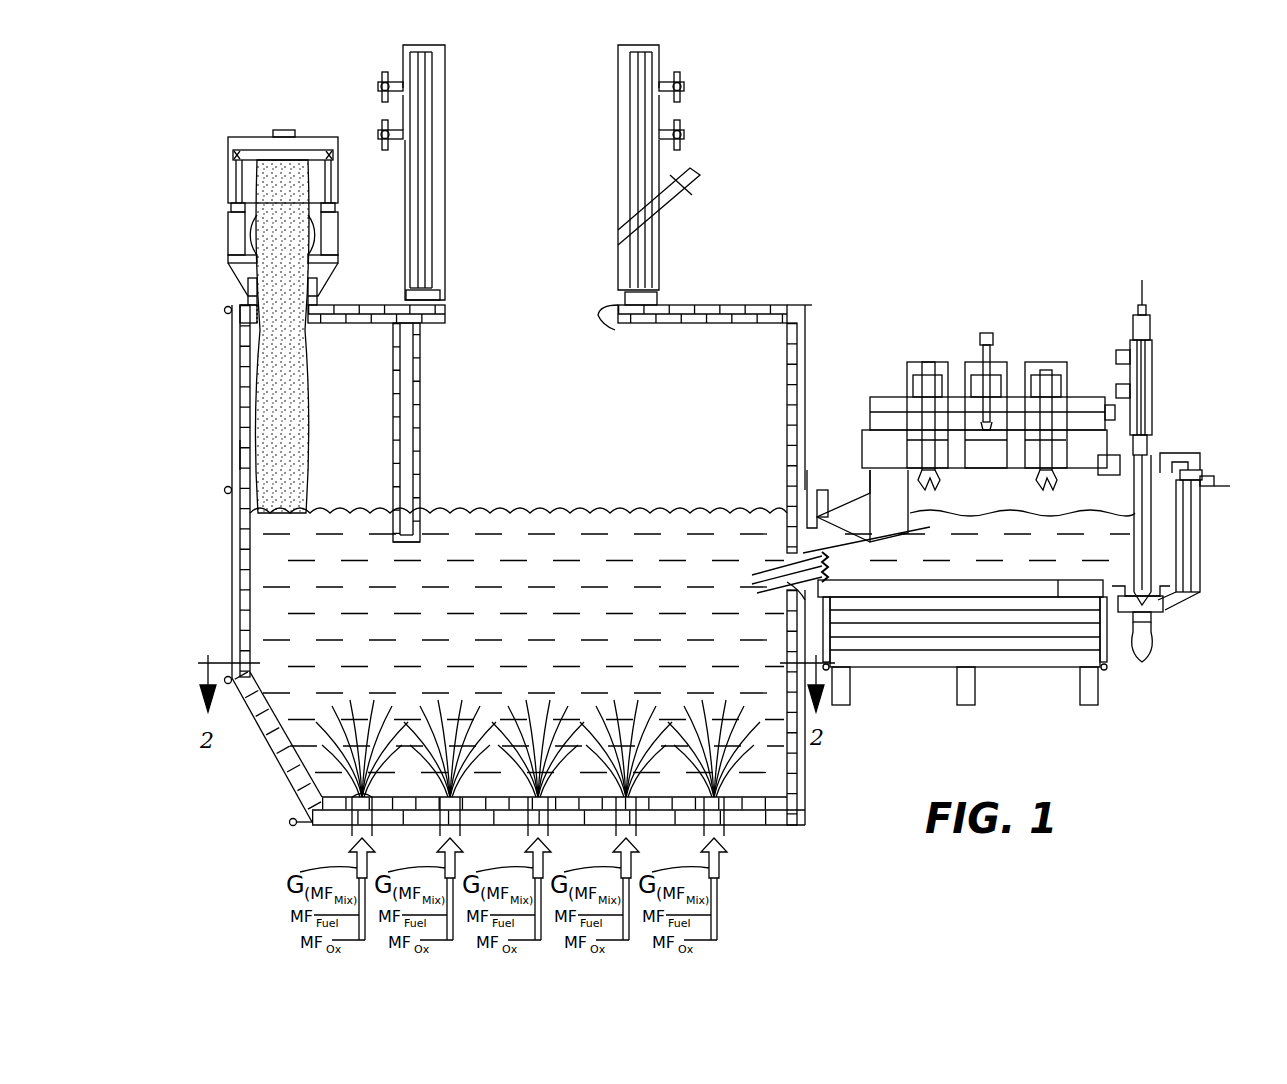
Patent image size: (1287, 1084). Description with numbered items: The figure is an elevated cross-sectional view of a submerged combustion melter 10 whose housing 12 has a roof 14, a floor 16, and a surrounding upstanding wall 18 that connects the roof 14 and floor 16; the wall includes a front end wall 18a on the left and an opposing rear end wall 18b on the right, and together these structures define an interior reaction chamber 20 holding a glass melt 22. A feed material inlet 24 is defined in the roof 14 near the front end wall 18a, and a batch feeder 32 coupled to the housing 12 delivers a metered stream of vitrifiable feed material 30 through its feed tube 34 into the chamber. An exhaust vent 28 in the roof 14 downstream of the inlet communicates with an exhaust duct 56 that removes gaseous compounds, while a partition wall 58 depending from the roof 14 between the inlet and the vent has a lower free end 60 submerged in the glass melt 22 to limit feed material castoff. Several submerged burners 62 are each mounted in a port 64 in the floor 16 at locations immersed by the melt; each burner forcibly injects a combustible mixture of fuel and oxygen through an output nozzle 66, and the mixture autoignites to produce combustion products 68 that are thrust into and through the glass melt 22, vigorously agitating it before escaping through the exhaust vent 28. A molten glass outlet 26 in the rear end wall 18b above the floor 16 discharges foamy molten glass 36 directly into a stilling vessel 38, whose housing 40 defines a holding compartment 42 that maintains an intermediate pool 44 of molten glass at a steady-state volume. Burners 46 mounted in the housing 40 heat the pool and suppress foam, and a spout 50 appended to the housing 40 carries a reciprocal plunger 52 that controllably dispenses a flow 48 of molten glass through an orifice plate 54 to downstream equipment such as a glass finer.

The submerged combustion melter 10 is at (765, 205).
The housing 12 is at (232, 353).
The roof 14 is at (688, 304).
The floor 16 is at (500, 822).
The surrounding upstanding wall 18 is at (240, 422).
The front end wall 18a is at (240, 460).
The rear end wall 18b is at (810, 385).
The interior reaction chamber 20 is at (275, 525).
The glass melt 22 is at (534, 600).
The feed material inlet 24 is at (300, 323).
The molten glass outlet 26 is at (778, 565).
The exhaust vent 28 is at (623, 331).
The vitrifiable feed material 30 is at (300, 365).
The batch feeder 32 is at (236, 203).
The feed tube 34 is at (298, 172).
The foamy molten glass 36 is at (790, 585).
The stilling vessel 38 is at (1048, 353).
The housing 40 is at (885, 453).
The holding compartment 42 is at (1050, 580).
The intermediate pool 44 is at (1020, 560).
The burners 46 is at (1045, 410).
The flow of molten glass 48 is at (1150, 640).
The spout 50 is at (1162, 410).
The reciprocal plunger 52 is at (1148, 455).
The orifice plate 54 is at (1160, 600).
The exhaust duct 56 is at (430, 192).
The partition wall 58 is at (410, 360).
The lower free end 60 is at (403, 545).
The submerged burners 62 is at (352, 825).
The port 64 is at (360, 826).
The output nozzle 66 is at (365, 797).
The combustion products 68 is at (350, 770).